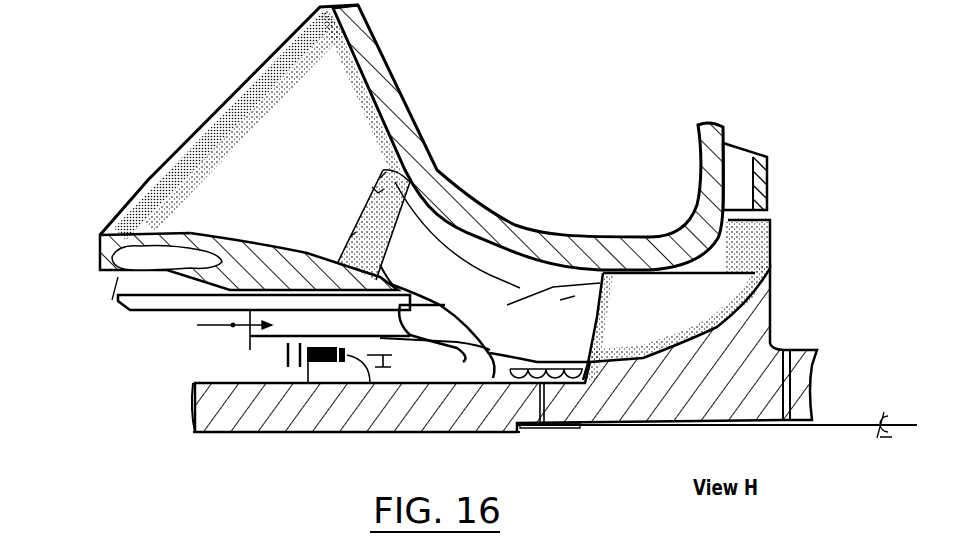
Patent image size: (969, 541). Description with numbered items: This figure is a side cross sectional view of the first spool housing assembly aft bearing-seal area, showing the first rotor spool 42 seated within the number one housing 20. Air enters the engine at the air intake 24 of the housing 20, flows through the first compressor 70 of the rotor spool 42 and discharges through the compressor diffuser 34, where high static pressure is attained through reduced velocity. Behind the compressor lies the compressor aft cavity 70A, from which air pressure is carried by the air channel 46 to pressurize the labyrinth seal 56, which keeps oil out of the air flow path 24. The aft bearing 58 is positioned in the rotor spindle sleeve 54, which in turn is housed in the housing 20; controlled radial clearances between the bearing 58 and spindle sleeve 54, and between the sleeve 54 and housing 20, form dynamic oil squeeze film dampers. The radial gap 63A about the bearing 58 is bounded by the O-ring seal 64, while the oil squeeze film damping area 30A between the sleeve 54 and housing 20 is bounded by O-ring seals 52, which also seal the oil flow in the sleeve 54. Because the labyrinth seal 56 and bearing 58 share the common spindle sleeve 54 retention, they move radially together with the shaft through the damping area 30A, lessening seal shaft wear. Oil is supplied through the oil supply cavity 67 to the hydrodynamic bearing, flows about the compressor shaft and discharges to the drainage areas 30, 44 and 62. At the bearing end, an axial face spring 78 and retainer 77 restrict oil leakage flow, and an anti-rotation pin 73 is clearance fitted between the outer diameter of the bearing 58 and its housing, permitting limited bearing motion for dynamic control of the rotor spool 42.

The #1 housing 20 is at (490, 206).
The air intake 24 is at (590, 250).
The oil drain channel 30 is at (118, 276).
The oil squeeze film damping area 30A is at (385, 182).
The compressor diffuser 34 is at (740, 168).
The 1st rotor spool 42 is at (232, 440).
The oil drainage area 44 is at (250, 333).
The air channel 46 is at (541, 423).
The O-ring seal 52 is at (350, 237).
The rotor spindle sleeve 54 is at (147, 299).
The labyrinth seal 56 is at (480, 387).
The aft bearing 58 is at (306, 392).
The oil drainage area 62 is at (440, 317).
The oil squeeze film damper gap 63A is at (567, 297).
The O-ring seal 64 is at (393, 380).
The oil supply cavity 67 is at (382, 178).
The 1st compressor 70 is at (713, 287).
The #1 compressor aft cavity 70A is at (786, 349).
The anti-rotation pin 73 is at (268, 420).
The retainer 77 is at (265, 365).
The axial face spring 78 is at (240, 421).